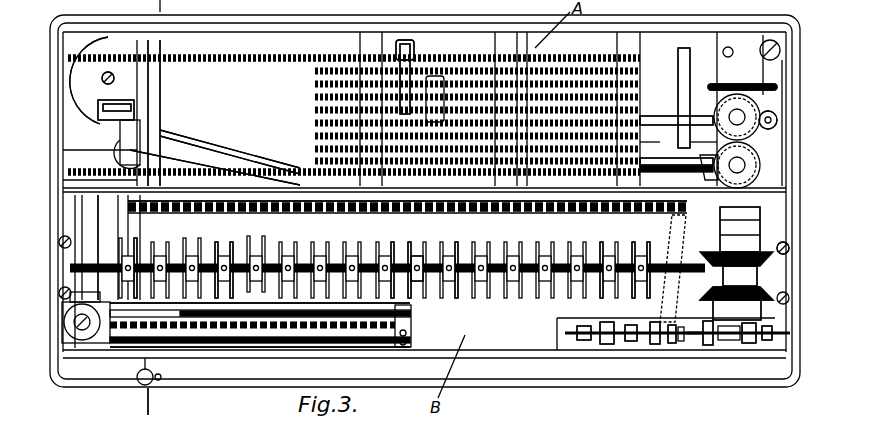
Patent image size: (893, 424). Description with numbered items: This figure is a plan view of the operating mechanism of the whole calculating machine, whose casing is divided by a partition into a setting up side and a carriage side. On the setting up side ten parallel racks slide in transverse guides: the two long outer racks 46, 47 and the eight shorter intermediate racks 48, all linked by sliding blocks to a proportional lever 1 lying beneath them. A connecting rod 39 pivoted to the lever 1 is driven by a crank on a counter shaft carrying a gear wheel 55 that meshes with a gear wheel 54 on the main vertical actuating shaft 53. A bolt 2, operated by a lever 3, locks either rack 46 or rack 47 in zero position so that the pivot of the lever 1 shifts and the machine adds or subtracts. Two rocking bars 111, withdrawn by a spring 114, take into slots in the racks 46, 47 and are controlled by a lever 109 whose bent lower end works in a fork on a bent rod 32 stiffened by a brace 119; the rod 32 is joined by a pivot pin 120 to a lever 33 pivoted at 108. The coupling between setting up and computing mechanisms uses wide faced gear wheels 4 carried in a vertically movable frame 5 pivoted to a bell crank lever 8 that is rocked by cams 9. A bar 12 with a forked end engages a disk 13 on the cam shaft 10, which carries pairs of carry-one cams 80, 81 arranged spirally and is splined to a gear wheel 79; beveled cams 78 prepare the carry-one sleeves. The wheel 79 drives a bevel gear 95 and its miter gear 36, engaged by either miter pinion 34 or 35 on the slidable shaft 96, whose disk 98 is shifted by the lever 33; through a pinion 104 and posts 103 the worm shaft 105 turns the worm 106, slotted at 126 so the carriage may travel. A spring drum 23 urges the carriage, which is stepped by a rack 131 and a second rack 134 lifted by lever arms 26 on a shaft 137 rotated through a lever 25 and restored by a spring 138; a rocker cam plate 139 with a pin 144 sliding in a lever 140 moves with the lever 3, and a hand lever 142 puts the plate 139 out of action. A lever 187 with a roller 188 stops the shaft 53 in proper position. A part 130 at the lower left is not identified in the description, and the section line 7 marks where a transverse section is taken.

The proportional lever 1 is at (416, 50).
The bolt 2 is at (138, 122).
The lever 3 is at (138, 103).
The wide faced gear wheels 4 is at (185, 214).
The frame 5 is at (480, 214).
The section line 7 is at (157, 402).
The bell crank lever 8 is at (668, 262).
The cams 9 is at (762, 225).
The cam shaft 10 is at (462, 285).
The bar 12 is at (385, 225).
The disk 13 is at (410, 280).
The drum 23 is at (89, 80).
The lever 25 is at (680, 80).
The lever arms 26 is at (138, 298).
The bent rod 32 is at (98, 150).
The lever 33 is at (655, 262).
The miter pinion 34 is at (712, 346).
The miter pinion 35 is at (755, 345).
The miter gear wheel 36 is at (745, 345).
The connecting rod 39 is at (645, 120).
The long outer rack 46 is at (250, 62).
The long outer rack 47 is at (250, 160).
The intermediate racks 48 is at (330, 100).
The main vertical actuating shaft 53 is at (733, 165).
The gear wheel 54 is at (752, 172).
The gear wheel 55 is at (757, 110).
The beveled cams 78 is at (789, 246).
The gear wheel 79 is at (773, 290).
The cam 80 is at (232, 238).
The cam 81 is at (252, 247).
The bevel gear wheel 95 is at (768, 302).
The shaft 96 is at (696, 338).
The disk 98 is at (680, 342).
The posts 103 is at (652, 340).
The pinion 104 is at (670, 340).
The worm shaft 105 is at (577, 333).
The worm 106 is at (625, 338).
The pivot 108 is at (675, 275).
The lever 109 is at (172, 103).
The rocking bars 111 is at (168, 78).
The spring 114 is at (182, 118).
The brace 119 is at (250, 130).
The pivot pin 120 is at (663, 160).
The slot 126 is at (600, 340).
The housing 130 is at (66, 325).
The rack 131 is at (105, 350).
The second rack 134 is at (306, 348).
The shaft 137 is at (300, 100).
The spring 138 is at (262, 342).
The rocker cam plate 139 is at (220, 312).
The lever 140 is at (100, 208).
The hand lever 142 is at (150, 377).
The pin 144 is at (78, 312).
The lever 187 is at (775, 78).
The roller 188 is at (777, 120).